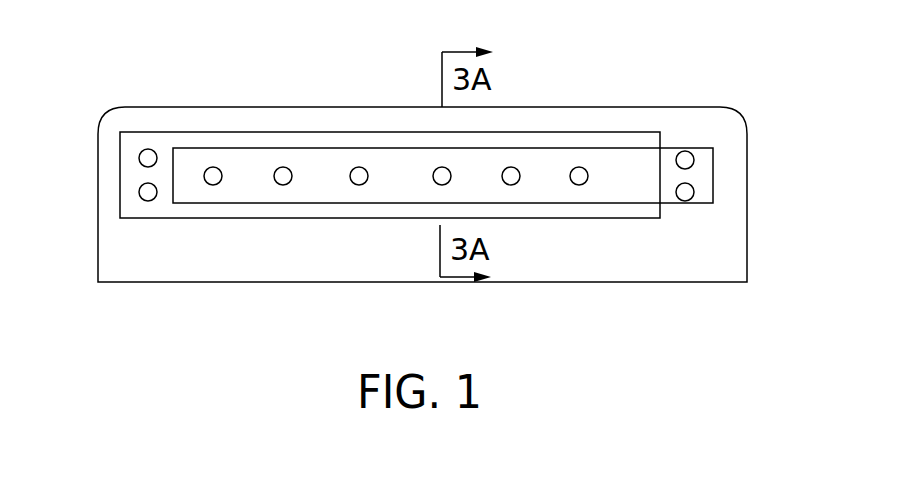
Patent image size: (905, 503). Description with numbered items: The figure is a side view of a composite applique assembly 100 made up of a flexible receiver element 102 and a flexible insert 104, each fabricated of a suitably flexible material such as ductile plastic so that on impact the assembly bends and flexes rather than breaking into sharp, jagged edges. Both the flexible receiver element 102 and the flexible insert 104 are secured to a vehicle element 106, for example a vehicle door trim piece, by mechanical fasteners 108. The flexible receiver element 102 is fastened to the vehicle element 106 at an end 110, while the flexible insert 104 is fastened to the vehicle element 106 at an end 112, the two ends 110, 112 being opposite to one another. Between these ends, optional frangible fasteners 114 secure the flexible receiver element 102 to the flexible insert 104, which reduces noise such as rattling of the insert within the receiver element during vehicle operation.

The composite applique assembly 100 is at (610, 61).
The flexible receiver element 102 is at (545, 131).
The flexible insert 104 is at (648, 197).
The vehicle element 106 is at (737, 262).
The mechanical fasteners 108 is at (138, 159).
The end 110 is at (119, 208).
The end 112 is at (716, 157).
The frangible fasteners 114 is at (359, 167).